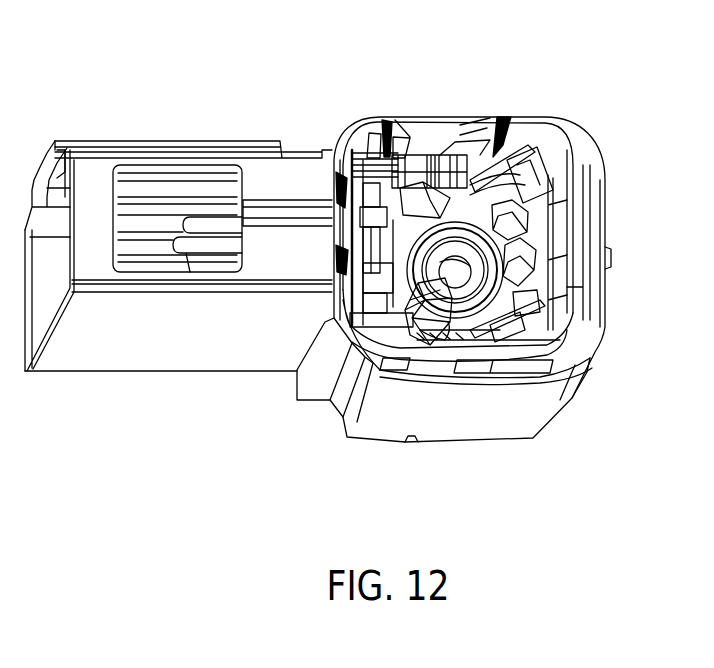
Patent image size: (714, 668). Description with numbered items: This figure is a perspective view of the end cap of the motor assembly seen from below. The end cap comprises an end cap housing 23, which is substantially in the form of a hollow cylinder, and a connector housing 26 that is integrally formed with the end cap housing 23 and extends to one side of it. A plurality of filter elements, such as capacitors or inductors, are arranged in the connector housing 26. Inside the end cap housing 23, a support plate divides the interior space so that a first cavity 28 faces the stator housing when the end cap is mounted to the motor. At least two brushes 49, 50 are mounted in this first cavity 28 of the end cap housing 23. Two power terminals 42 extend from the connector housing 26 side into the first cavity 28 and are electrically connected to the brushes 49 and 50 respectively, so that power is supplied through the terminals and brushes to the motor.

The end cap housing 23 is at (513, 408).
The connector housing 26 is at (170, 327).
The first cavity 28 is at (503, 120).
The power terminals 42 is at (202, 228).
The brush 49 is at (410, 323).
The brush 50 is at (430, 205).